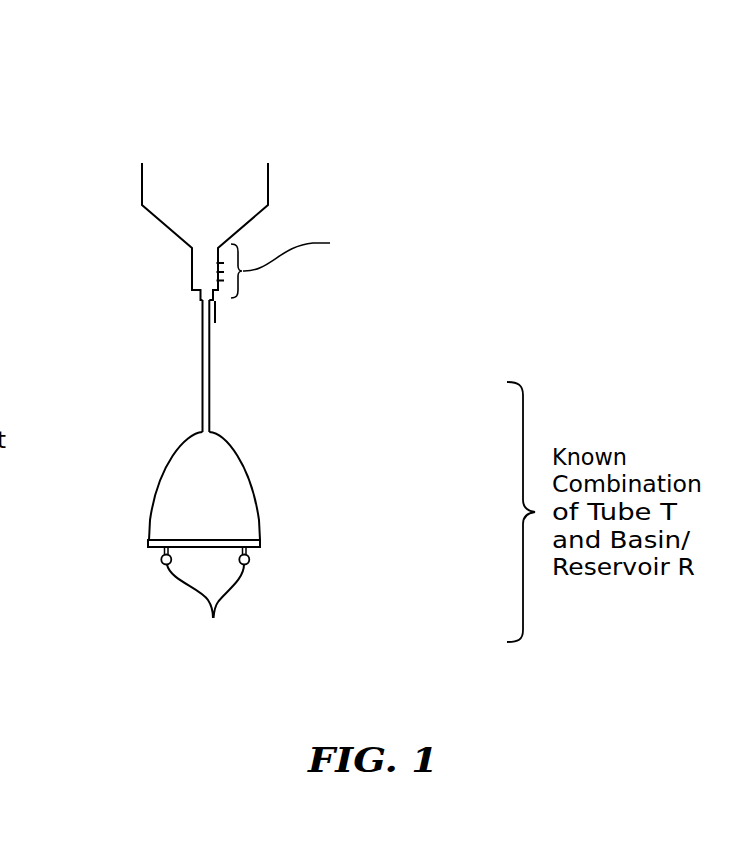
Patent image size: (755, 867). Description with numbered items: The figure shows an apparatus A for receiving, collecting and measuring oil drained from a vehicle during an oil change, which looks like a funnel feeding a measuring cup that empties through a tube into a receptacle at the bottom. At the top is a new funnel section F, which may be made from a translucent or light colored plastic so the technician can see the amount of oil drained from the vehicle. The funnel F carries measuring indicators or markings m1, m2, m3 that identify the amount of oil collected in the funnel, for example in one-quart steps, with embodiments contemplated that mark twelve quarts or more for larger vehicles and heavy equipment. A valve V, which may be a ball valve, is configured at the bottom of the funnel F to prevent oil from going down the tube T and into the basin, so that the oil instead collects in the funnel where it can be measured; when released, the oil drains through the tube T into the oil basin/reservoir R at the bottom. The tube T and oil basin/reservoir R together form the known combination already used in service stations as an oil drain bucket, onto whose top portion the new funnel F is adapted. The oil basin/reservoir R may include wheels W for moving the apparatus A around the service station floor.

The apparatus A is at (238, 97).
The funnel section F is at (161, 222).
The measuring indicator m1 is at (216, 280).
The measuring indicator m2 is at (216, 272).
The measuring indicator m3 is at (216, 263).
The valve V is at (215, 313).
The tube T is at (209, 398).
The oil basin/reservoir R is at (260, 517).
The wheels W is at (217, 600).